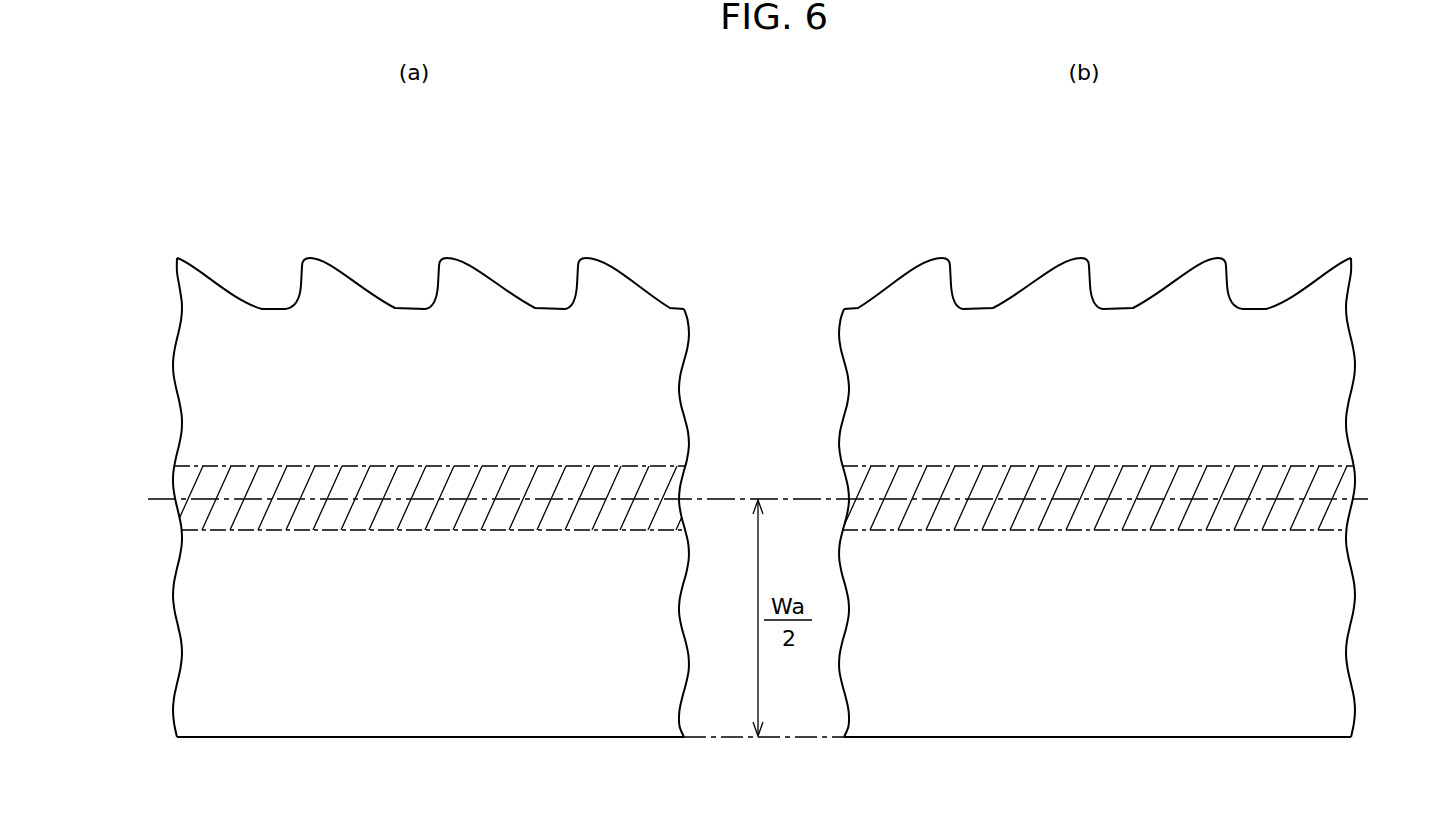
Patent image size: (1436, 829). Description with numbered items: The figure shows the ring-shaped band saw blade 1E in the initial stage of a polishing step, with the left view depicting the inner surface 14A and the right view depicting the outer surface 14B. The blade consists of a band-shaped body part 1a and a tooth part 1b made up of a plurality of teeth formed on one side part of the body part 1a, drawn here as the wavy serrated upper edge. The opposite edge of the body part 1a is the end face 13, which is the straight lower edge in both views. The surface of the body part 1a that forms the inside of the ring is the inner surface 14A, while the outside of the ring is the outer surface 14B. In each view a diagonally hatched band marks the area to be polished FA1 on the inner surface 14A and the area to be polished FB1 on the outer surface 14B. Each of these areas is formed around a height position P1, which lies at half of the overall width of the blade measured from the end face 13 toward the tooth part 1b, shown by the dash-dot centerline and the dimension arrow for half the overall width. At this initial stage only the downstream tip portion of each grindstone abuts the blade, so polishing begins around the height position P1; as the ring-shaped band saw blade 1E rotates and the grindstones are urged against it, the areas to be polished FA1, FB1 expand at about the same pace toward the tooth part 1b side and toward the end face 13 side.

The body part 1a is at (225, 408).
The tooth part 1b is at (552, 243).
The ring-shaped band saw blade 1E is at (610, 738).
The end face 13 is at (482, 738).
The inner surface 14A is at (213, 643).
The outer surface 14B is at (1278, 657).
The height position P1 is at (734, 500).
The area to be polished FA1 is at (436, 466).
The area to be polished FB1 is at (1098, 466).